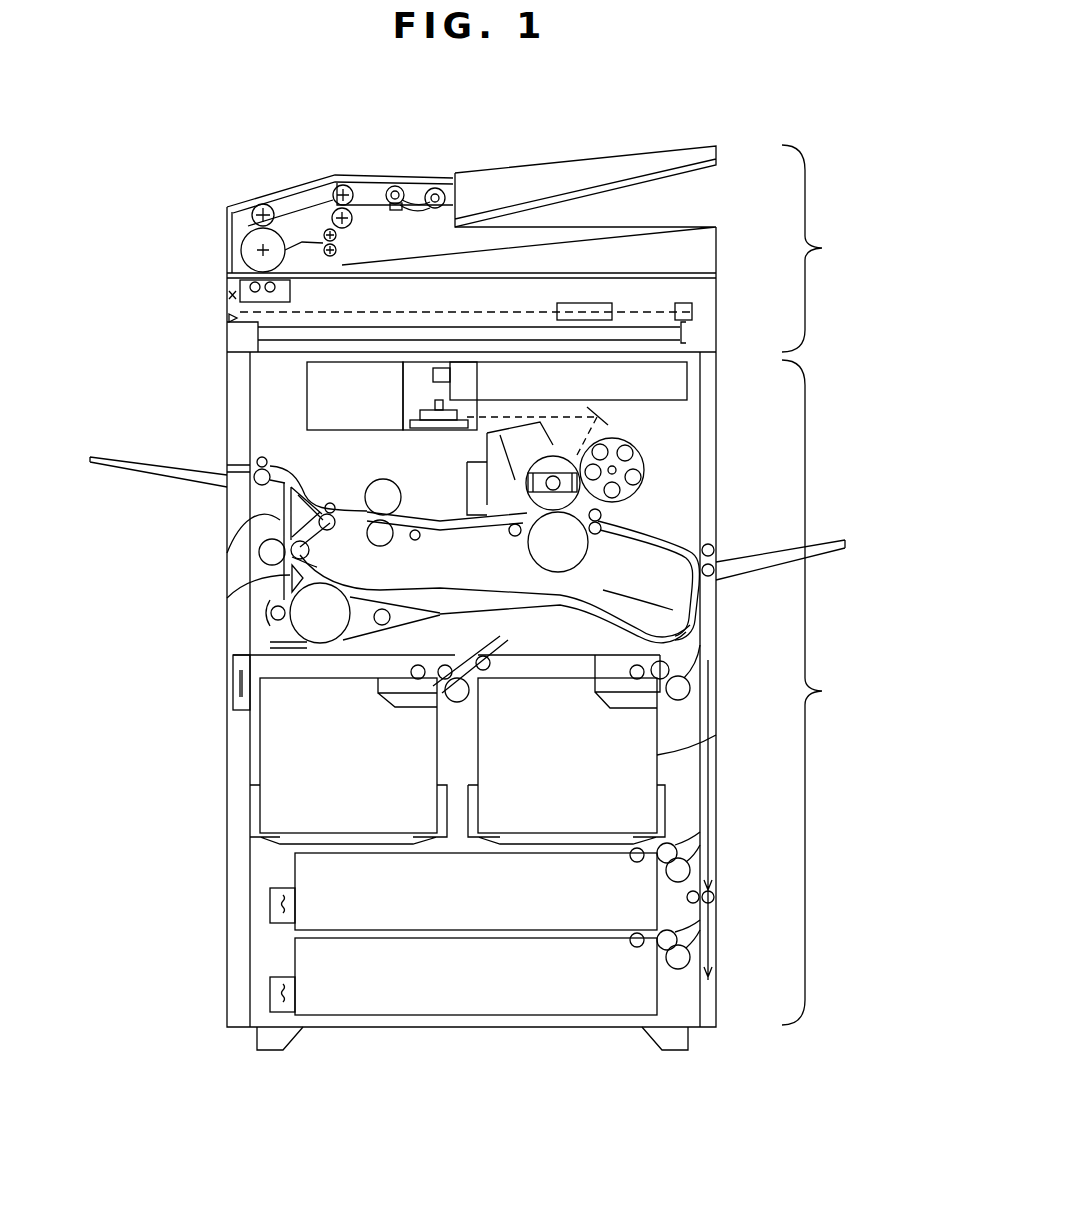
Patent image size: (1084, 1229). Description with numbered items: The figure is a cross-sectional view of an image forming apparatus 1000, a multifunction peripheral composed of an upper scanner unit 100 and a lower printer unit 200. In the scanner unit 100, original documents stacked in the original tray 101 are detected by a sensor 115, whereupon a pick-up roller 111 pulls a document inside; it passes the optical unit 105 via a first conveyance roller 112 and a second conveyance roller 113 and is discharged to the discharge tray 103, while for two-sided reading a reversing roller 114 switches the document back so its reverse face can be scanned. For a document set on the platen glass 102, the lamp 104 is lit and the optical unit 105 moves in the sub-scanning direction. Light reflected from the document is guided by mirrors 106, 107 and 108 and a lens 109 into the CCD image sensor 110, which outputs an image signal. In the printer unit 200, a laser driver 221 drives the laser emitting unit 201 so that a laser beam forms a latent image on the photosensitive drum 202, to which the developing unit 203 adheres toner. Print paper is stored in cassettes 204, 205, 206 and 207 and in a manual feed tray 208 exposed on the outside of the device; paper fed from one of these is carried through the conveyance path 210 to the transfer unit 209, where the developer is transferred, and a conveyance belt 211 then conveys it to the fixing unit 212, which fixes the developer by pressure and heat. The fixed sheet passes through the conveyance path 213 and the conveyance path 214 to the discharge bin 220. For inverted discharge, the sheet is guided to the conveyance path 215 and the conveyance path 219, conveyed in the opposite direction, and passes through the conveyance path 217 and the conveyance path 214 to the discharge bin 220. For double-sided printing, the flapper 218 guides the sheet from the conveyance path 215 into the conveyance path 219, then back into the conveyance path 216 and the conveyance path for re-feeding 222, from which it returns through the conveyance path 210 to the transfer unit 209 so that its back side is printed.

The scanner unit 100 is at (555, 248).
The original tray 101 is at (488, 195).
The platen glass 102 is at (700, 277).
The discharge tray 103 is at (673, 226).
The lamp 104 is at (232, 272).
The optical unit 105 is at (290, 287).
The mirror 106 is at (268, 300).
The mirror 107 is at (232, 295).
The mirror 108 is at (232, 320).
The lens 109 is at (585, 305).
The CCD image sensor 110 is at (693, 312).
The pick-up roller 111 is at (412, 182).
The first conveyance roller 112 is at (337, 178).
The second conveyance roller 113 is at (258, 204).
The reversing roller 114 is at (340, 242).
The sensor 115 is at (437, 182).
The printer unit 200 is at (832, 692).
The laser emitting unit 201 is at (427, 432).
The photosensitive drum 202 is at (528, 502).
The developing unit 203 is at (645, 462).
The cassette 204 is at (662, 746).
The cassette 205 is at (260, 745).
The cassette 206 is at (648, 916).
The cassette 207 is at (648, 992).
The manual feed tray 208 is at (728, 550).
The transfer unit 209 is at (587, 546).
The conveyance path 210 is at (640, 530).
The conveyance belt 211 is at (483, 535).
The fixing unit 212 is at (378, 492).
The conveyance path 213 is at (287, 483).
The conveyance path 214 is at (243, 475).
The conveyance path 215 is at (310, 535).
The conveyance path 216 is at (300, 645).
The conveyance path 217 is at (245, 548).
The flapper 218 is at (250, 588).
The conveyance path 219 is at (397, 590).
The discharge bin 220 is at (132, 457).
The laser driver 221 is at (307, 413).
The conveyance path for re-feeding 222 is at (412, 618).
The image forming apparatus 1000 is at (478, 1060).